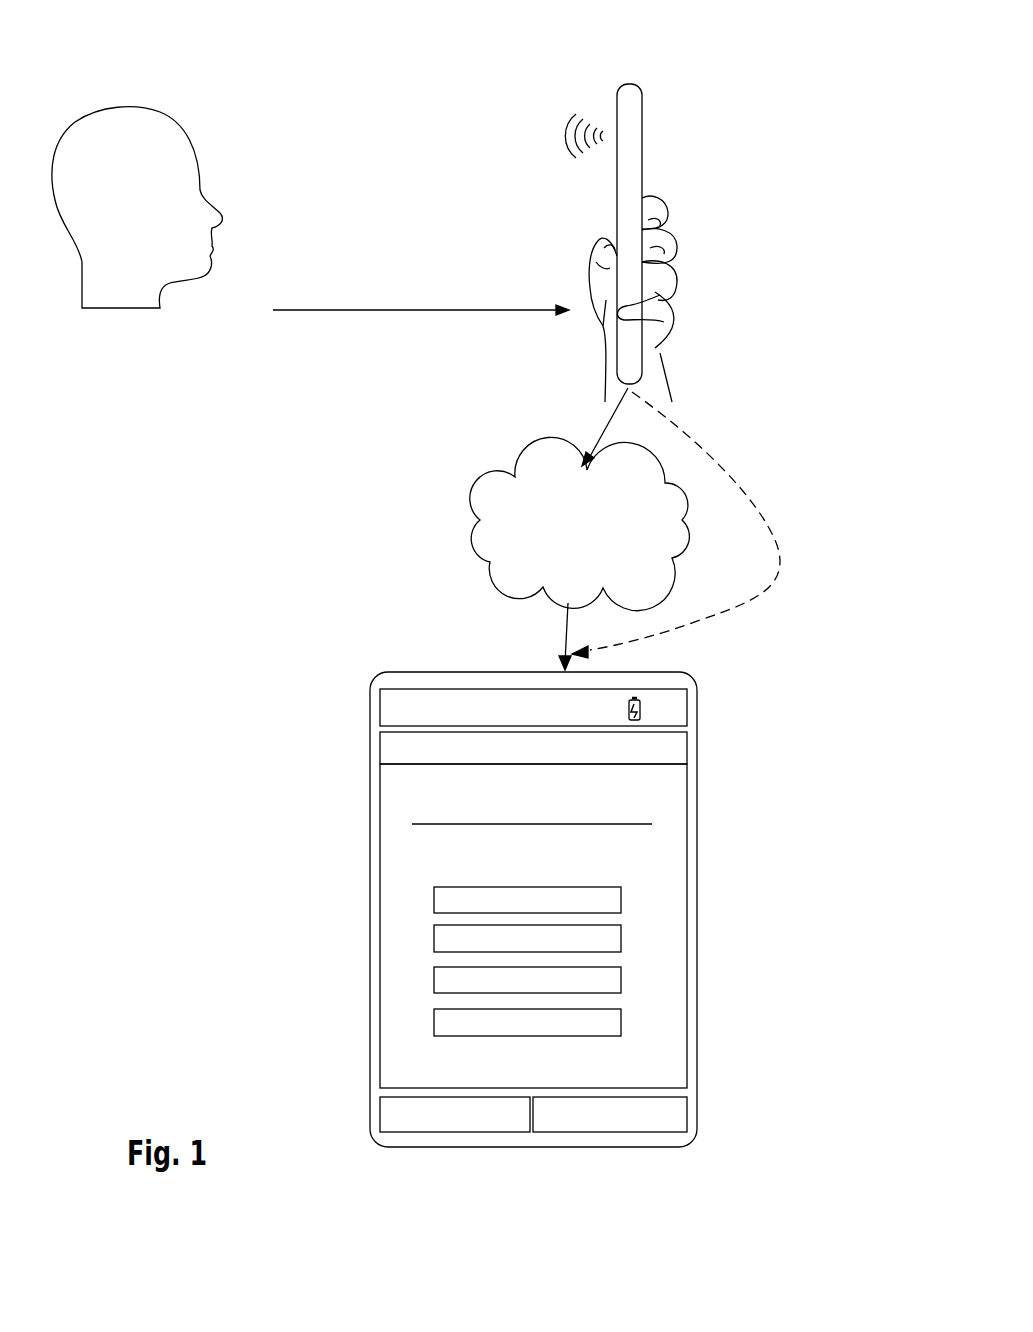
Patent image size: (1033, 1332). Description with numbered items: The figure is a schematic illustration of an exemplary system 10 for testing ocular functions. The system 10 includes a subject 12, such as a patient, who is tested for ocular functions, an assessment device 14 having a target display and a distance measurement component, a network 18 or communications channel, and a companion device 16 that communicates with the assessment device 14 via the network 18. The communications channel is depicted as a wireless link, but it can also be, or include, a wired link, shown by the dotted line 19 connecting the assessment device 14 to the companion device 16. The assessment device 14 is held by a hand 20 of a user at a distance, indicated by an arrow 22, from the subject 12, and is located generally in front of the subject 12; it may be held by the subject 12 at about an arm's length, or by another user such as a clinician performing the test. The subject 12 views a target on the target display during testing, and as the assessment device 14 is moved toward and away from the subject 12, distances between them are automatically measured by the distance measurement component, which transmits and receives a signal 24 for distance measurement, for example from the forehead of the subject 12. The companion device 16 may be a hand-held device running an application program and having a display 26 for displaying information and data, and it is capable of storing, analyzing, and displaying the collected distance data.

The system 10 is at (743, 27).
The subject 12 is at (186, 124).
The assessment device 14 is at (642, 133).
The companion device 16 is at (697, 795).
The network 18 is at (690, 540).
The dotted line 19 is at (772, 536).
The hand 20 is at (680, 268).
The arrow 22 is at (413, 310).
The signal 24 is at (568, 130).
The display 26 is at (420, 855).